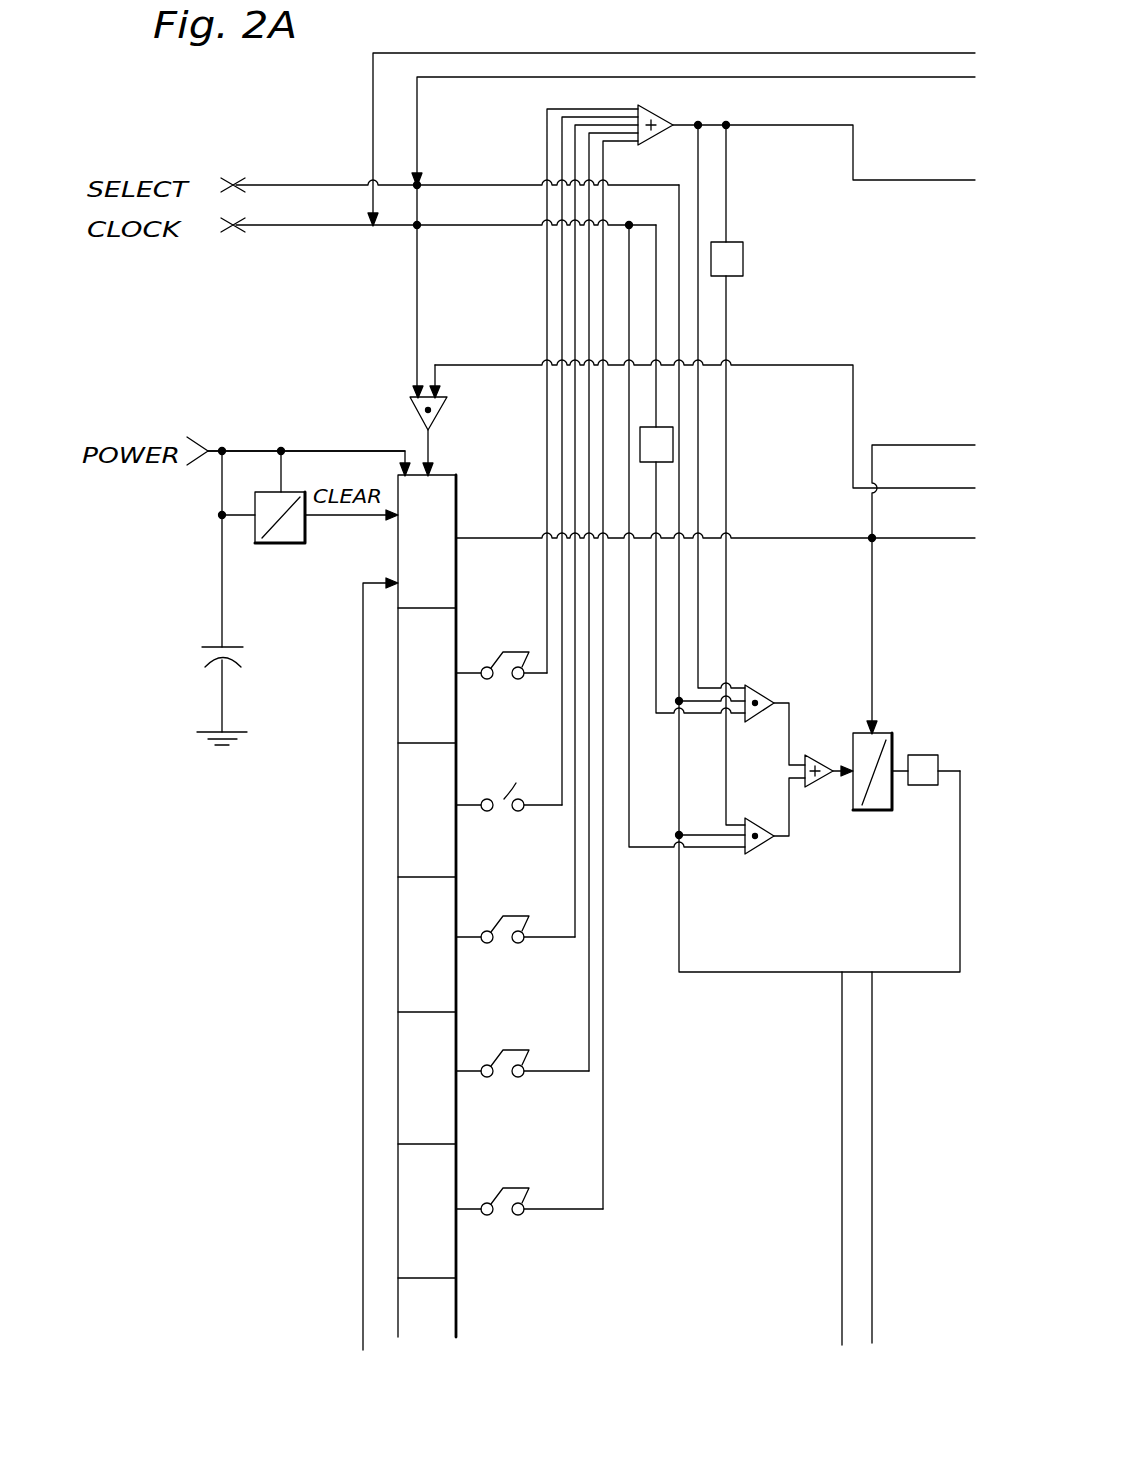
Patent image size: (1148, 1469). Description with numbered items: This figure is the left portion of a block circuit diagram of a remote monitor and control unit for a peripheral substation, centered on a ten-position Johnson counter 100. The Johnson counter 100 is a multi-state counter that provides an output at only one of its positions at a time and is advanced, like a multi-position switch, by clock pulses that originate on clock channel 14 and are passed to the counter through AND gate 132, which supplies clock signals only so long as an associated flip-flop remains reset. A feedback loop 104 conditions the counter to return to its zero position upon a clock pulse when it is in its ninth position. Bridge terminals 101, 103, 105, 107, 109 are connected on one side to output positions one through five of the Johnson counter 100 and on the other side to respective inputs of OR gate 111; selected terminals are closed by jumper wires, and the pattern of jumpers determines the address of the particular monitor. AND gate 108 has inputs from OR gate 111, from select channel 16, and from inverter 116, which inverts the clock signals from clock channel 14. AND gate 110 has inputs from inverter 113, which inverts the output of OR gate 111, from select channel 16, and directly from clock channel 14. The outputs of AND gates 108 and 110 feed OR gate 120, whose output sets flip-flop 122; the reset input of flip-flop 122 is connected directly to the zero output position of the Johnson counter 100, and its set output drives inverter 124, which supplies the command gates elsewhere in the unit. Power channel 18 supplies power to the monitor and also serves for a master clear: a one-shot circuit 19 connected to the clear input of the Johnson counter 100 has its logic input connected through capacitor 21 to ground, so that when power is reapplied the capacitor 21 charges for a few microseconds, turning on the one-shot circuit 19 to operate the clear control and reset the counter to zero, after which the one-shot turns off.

The clock channel 14 is at (325, 228).
The select channel 16 is at (313, 184).
The power channel 18 is at (246, 450).
The one-shot circuit 19 is at (298, 545).
The capacitor 21 is at (208, 645).
The Johnson counter 100 is at (446, 475).
The bridge terminal 101 is at (516, 624).
The bridge terminal 103 is at (523, 760).
The feedback loop 104 is at (363, 1250).
The bridge terminal 105 is at (535, 893).
The bridge terminal 107 is at (535, 1030).
The AND gate 108 is at (757, 690).
The bridge terminal 109 is at (535, 1160).
The AND gate 110 is at (758, 853).
The OR gate 111 is at (659, 111).
The inverter 113 is at (743, 254).
The inverter 116 is at (675, 445).
The OR gate 120 is at (840, 732).
The flip-flop 122 is at (872, 810).
The inverter 124 is at (950, 730).
The AND gate 132 is at (410, 408).